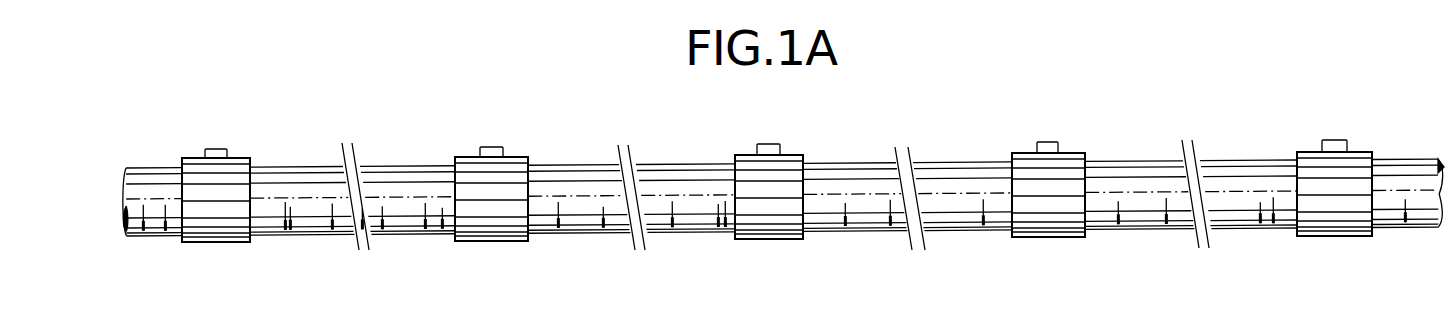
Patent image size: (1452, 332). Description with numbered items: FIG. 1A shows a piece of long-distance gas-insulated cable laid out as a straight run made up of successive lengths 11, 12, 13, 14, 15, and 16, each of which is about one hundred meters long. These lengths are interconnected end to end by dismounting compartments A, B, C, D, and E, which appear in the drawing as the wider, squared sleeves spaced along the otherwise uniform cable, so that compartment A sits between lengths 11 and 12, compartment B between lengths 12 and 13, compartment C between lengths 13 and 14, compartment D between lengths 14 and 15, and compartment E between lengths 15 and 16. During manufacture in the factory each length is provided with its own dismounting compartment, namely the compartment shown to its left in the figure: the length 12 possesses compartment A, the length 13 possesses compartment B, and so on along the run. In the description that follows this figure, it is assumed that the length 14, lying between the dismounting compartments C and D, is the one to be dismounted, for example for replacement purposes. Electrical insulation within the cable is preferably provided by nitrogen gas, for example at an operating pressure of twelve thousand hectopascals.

The length 11 is at (157, 180).
The length 12 is at (385, 180).
The length 13 is at (670, 172).
The length 14 is at (945, 167).
The length 15 is at (1232, 170).
The length 16 is at (1405, 168).
The dismounting compartment A is at (210, 234).
The dismounting compartment B is at (485, 232).
The dismounting compartment C is at (762, 230).
The dismounting compartment D is at (1042, 230).
The dismounting compartment E is at (1333, 228).